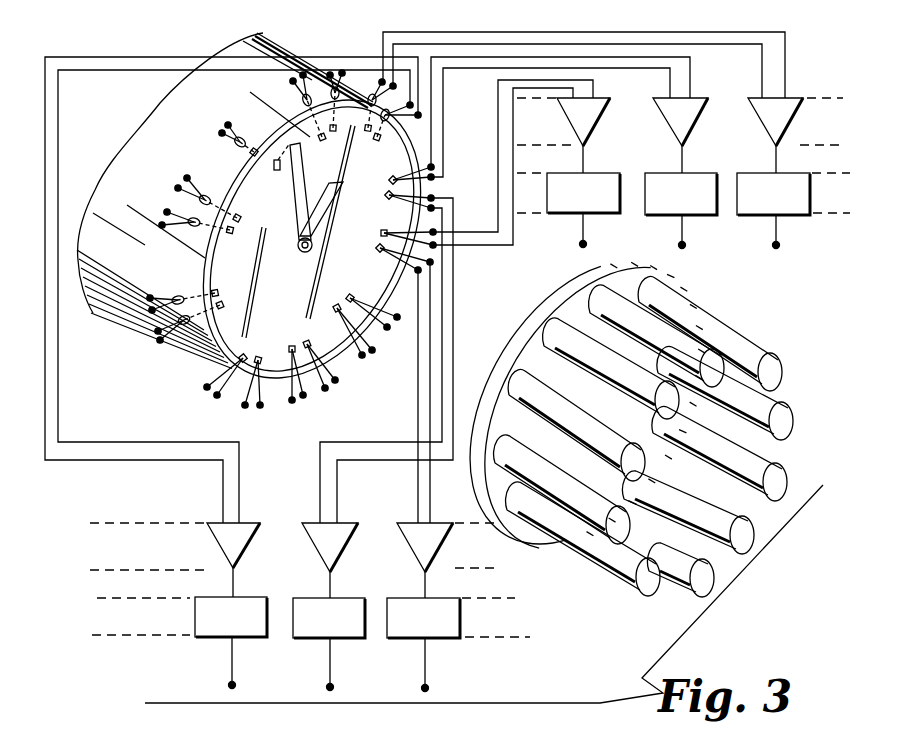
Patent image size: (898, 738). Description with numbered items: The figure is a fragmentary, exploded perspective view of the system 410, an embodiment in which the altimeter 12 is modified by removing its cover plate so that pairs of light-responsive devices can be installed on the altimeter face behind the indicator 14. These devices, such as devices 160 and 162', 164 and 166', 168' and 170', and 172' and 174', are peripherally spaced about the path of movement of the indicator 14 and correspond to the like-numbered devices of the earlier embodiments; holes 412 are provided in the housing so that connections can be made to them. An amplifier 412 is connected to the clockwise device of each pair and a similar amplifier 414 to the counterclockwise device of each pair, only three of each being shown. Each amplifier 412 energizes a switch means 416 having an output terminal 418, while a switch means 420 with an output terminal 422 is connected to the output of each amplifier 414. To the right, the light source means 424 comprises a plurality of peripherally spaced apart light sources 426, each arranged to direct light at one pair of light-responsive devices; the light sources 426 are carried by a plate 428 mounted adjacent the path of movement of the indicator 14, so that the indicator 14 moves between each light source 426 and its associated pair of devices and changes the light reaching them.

The altimeter 12 is at (150, 140).
The indicator 14 is at (258, 258).
The light-responsive device 160 is at (274, 176).
The light-responsive device 162' is at (236, 202).
The light-responsive device 164 is at (322, 142).
The light-responsive device 166' is at (367, 119).
The light-responsive device 168' is at (369, 79).
The light-responsive device 170' is at (433, 123).
The light-responsive device 172' is at (393, 179).
The light-responsive device 174' is at (392, 207).
The system 410 is at (462, 269).
The amplifier 412 is at (248, 148).
The amplifier 414 is at (580, 115).
The switch means 416 is at (230, 623).
The output terminal 418 is at (236, 686).
The switch means 420 is at (595, 192).
The output terminal 422 is at (583, 244).
The light source means 424 is at (617, 430).
The light source 426 is at (725, 352).
The plate 428 is at (525, 362).